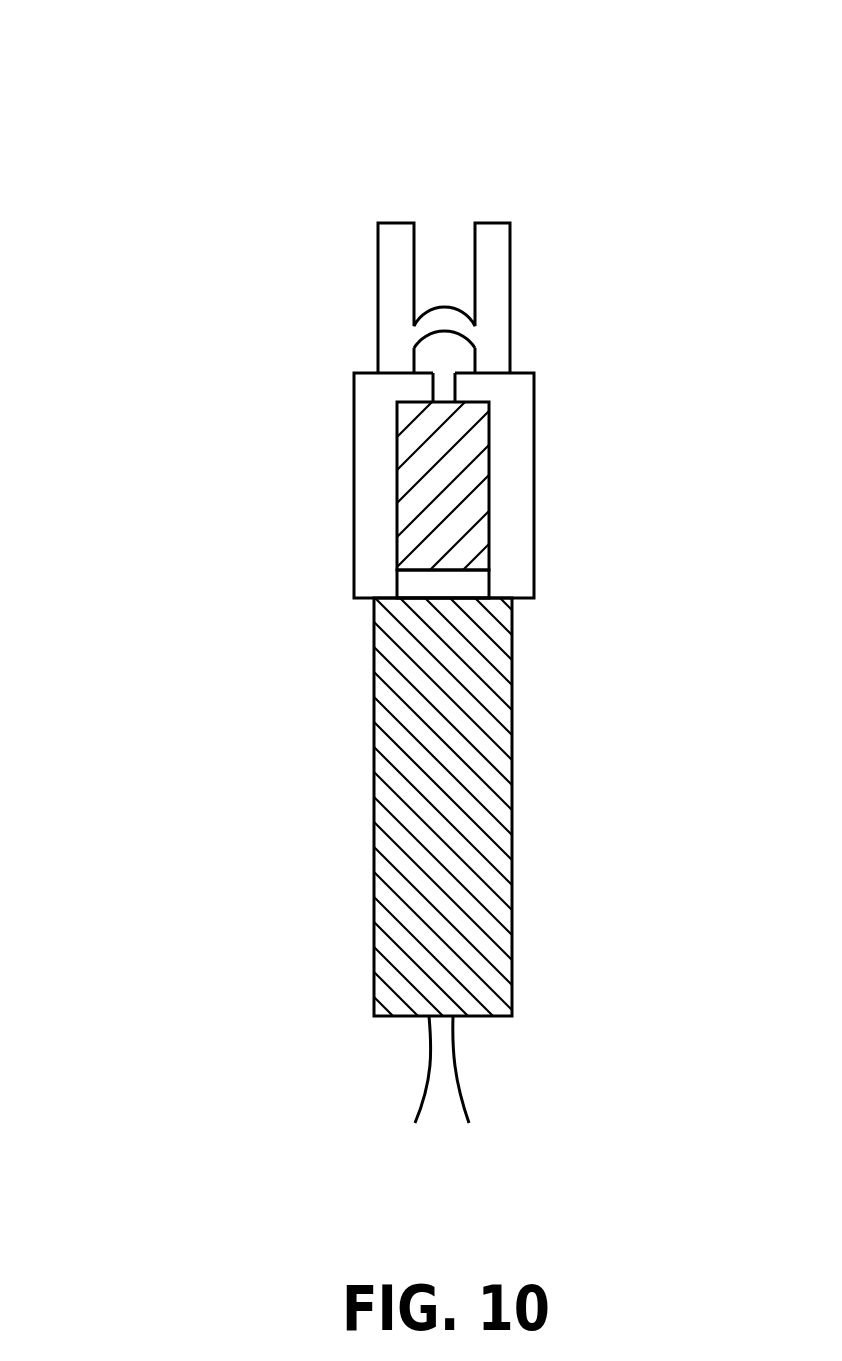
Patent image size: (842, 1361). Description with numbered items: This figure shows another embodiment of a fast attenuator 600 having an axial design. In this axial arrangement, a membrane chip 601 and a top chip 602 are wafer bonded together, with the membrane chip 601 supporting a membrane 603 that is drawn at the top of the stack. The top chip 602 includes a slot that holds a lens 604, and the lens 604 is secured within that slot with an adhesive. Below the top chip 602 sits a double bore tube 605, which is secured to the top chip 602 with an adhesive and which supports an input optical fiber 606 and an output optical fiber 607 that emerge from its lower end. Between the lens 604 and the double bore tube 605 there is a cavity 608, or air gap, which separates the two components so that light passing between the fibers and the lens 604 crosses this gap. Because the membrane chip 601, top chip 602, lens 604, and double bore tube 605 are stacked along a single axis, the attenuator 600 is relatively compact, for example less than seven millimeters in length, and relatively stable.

The connector assembly 600 is at (175, 76).
The membrane chip 601 is at (510, 307).
The top chip 602 is at (534, 435).
The membrane 603 is at (446, 306).
The lens 604 is at (489, 503).
The double bore tube 605 is at (512, 817).
The input optical fiber 606 is at (457, 1088).
The output optical fiber 607 is at (432, 1063).
The cavity 608 is at (489, 587).